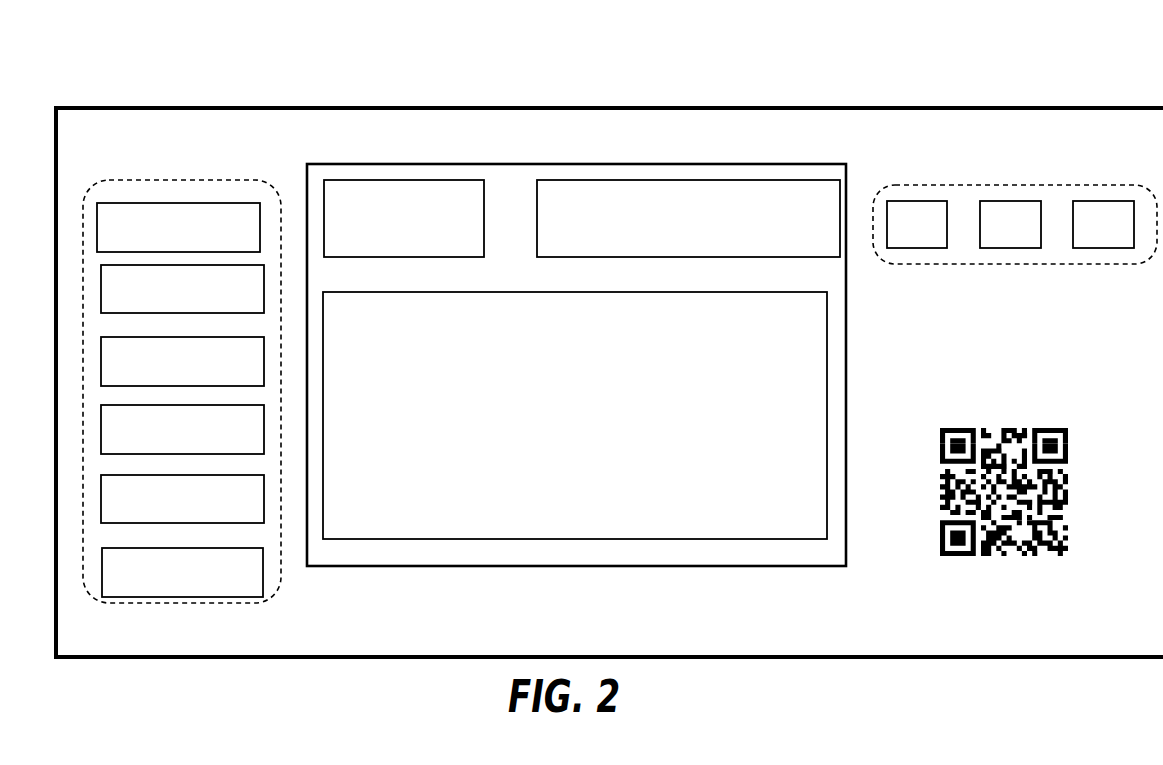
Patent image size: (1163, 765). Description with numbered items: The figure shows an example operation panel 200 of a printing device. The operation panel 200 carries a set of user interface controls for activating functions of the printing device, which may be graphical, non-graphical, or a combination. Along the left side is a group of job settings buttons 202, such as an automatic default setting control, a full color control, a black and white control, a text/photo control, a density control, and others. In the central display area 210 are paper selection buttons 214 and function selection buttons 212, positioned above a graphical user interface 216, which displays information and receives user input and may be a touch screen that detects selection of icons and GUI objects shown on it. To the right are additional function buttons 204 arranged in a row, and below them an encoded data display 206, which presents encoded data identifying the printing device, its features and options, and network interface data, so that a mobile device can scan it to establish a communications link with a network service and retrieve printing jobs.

The operation panel 200 is at (250, 101).
The job settings buttons 202 is at (187, 603).
The additional function buttons 204 is at (975, 185).
The encoded data display 206 is at (992, 558).
The display panel 210 is at (583, 164).
The function selection buttons 212 is at (745, 193).
The paper selection buttons 214 is at (392, 190).
The graphical user interface 216 is at (353, 539).